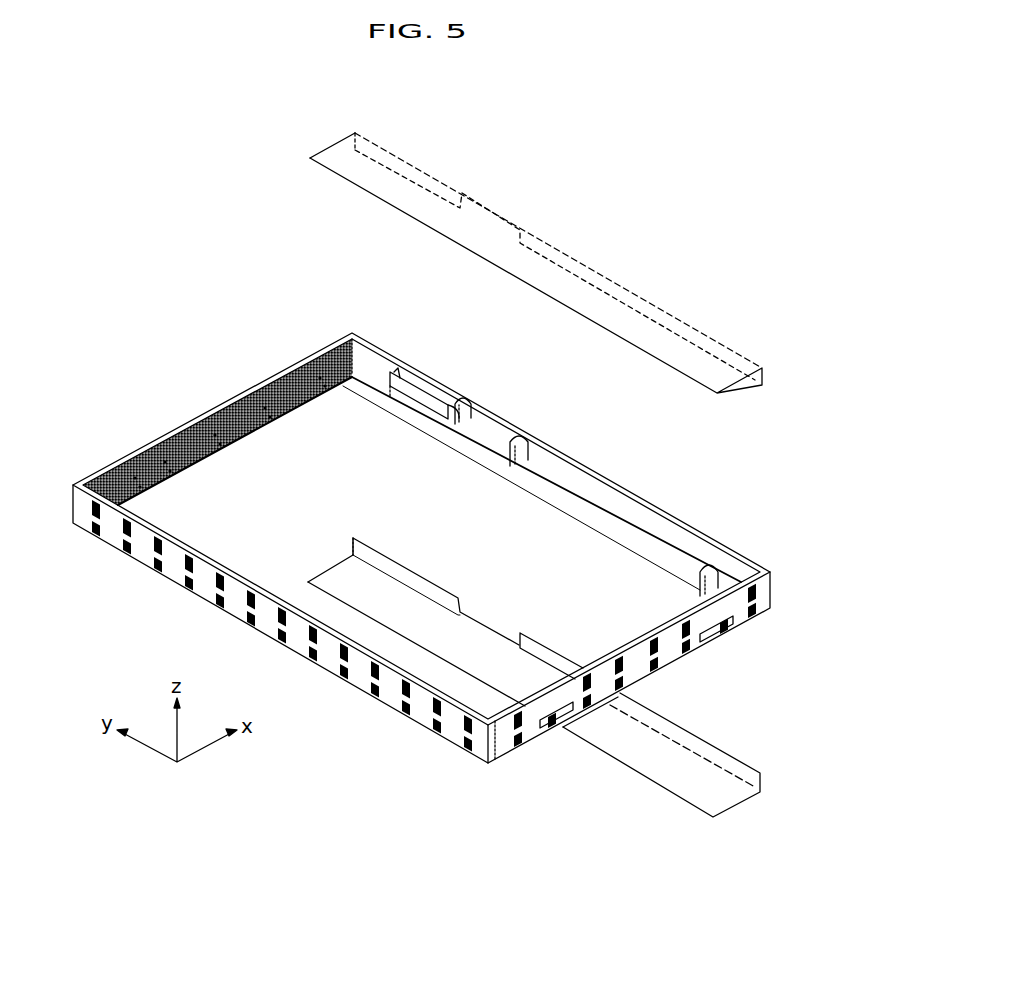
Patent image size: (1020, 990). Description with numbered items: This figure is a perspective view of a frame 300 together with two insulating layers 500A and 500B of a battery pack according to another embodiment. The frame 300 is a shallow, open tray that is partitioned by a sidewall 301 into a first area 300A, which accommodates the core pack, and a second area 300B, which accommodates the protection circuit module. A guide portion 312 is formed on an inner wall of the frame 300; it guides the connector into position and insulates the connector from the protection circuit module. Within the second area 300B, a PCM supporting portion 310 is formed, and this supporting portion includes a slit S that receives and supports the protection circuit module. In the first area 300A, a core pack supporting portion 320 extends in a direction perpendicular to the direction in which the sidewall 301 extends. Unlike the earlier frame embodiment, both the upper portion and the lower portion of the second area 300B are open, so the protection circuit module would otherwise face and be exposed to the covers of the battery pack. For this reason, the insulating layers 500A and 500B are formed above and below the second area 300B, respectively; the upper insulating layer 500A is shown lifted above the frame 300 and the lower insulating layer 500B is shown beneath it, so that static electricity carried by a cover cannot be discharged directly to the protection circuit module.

The frame 300 is at (740, 444).
The first area 300A is at (517, 593).
The second area 300B is at (650, 530).
The sidewall 301 is at (403, 413).
The PCM supporting portion 310 is at (405, 385).
The guide portion 312 is at (468, 396).
The core pack supporting portion 320 is at (248, 440).
The insulating layer 500A is at (327, 152).
The insulating layer 500B is at (697, 792).
The slit S is at (390, 368).